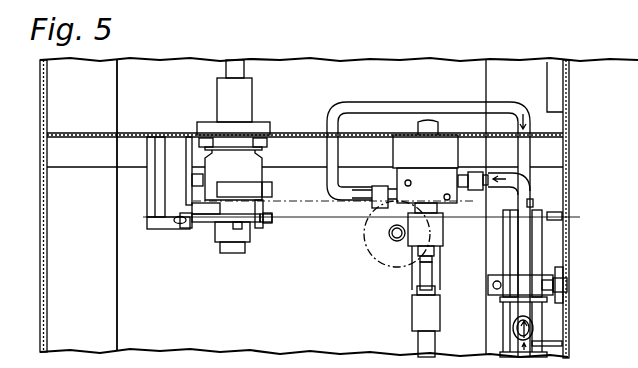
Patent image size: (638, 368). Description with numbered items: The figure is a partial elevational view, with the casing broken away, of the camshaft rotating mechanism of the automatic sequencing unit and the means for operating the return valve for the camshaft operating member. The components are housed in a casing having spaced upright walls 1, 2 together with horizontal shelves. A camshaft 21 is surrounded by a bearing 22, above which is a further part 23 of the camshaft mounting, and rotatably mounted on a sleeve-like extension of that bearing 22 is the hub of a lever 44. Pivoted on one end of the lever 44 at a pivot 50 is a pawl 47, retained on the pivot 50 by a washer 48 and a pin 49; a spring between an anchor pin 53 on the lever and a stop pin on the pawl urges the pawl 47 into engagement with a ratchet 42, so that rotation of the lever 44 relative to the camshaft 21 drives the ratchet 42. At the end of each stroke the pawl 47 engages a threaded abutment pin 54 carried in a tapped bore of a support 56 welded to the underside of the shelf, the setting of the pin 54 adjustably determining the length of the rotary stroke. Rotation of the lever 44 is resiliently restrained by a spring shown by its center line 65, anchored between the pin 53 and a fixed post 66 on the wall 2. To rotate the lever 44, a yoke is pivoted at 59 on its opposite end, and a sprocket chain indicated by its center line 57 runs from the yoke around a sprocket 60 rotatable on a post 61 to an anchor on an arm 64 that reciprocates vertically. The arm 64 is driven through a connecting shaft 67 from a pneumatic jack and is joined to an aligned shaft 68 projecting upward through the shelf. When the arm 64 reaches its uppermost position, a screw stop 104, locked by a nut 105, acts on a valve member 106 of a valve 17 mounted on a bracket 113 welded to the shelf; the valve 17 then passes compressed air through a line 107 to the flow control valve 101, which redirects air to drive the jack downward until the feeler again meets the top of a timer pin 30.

The upright wall 1 is at (40, 299).
The upright wall 2 is at (565, 250).
The valve 17 is at (447, 212).
The camshaft 21 is at (245, 62).
The bearing 22 is at (268, 124).
The actuator body 23 is at (203, 137).
The timer pin 30 is at (249, 363).
The ratchet 42 is at (193, 219).
The lever 44 is at (262, 158).
The pawl 47 is at (218, 222).
The washer 48 is at (256, 221).
The pin 49 is at (240, 227).
The pivot 50 is at (222, 176).
The anchor pin 53 is at (273, 208).
The threaded abutment pin 54 is at (152, 198).
The support 56 is at (137, 220).
The sprocket chain 57 is at (330, 205).
The yoke pivot 59 is at (192, 175).
The sprocket 60 is at (373, 262).
The post 61 is at (398, 245).
The arm 64 is at (412, 320).
The spring 65 is at (353, 218).
The fixed post 66 is at (567, 208).
The connecting shaft 67 is at (435, 346).
The shaft 68 is at (440, 127).
The flow control valve 101 is at (562, 345).
The screw stop 104 is at (433, 280).
The nut 105 is at (432, 294).
The valve member 106 is at (436, 255).
The line 107 is at (413, 103).
The bracket 113 is at (447, 157).